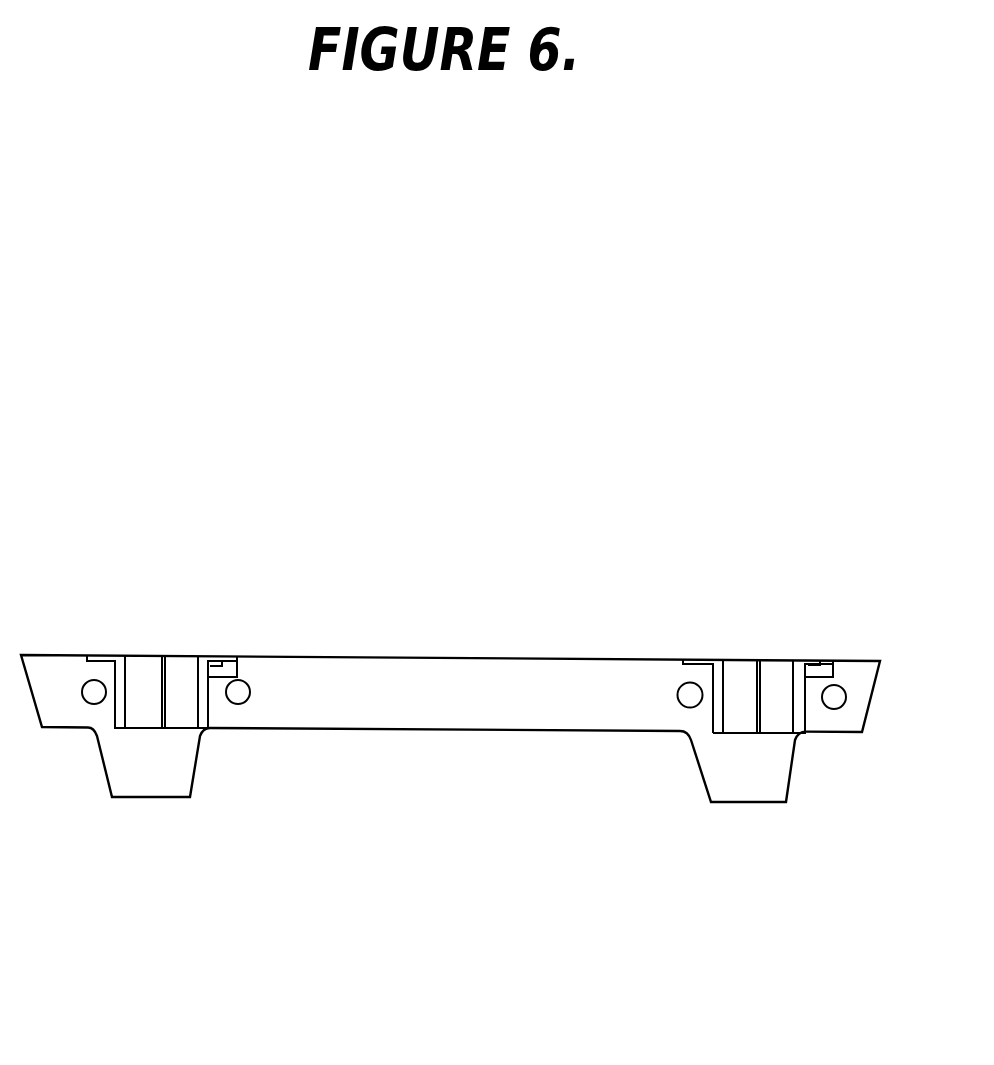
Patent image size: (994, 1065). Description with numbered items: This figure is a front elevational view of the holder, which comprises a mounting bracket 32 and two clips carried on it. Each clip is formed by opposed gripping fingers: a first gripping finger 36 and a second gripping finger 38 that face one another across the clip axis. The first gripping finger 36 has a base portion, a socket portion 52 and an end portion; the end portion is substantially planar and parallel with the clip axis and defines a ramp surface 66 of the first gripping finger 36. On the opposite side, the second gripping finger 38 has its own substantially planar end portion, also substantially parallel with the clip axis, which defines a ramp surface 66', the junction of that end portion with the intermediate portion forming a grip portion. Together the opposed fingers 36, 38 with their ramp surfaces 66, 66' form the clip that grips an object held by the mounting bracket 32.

The mounting bracket 32 is at (370, 685).
The first gripping finger 36 is at (732, 647).
The second gripping finger 38 is at (785, 645).
The socket portion 52 is at (710, 706).
The ramp surface 66 is at (629, 824).
The ramp surface 66' is at (842, 810).